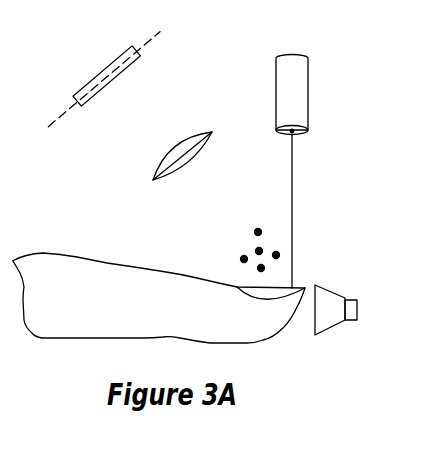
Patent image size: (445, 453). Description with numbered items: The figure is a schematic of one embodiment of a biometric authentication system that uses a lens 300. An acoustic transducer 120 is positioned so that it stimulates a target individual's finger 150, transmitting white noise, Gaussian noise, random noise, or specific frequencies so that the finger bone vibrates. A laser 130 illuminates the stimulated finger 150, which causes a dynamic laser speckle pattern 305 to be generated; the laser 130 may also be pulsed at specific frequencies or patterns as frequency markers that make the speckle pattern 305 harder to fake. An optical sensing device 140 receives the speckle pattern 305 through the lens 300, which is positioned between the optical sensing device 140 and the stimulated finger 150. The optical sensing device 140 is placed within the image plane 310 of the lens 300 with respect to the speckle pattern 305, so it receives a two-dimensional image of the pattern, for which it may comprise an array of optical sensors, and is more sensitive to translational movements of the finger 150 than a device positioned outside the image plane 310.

The acoustic transducer 120 is at (328, 298).
The laser 130 is at (305, 82).
The optical sensing device 140 is at (104, 72).
The finger 150 is at (91, 271).
The lens 300 is at (162, 166).
The speckle pattern 305 is at (246, 232).
The image plane 310 is at (60, 133).